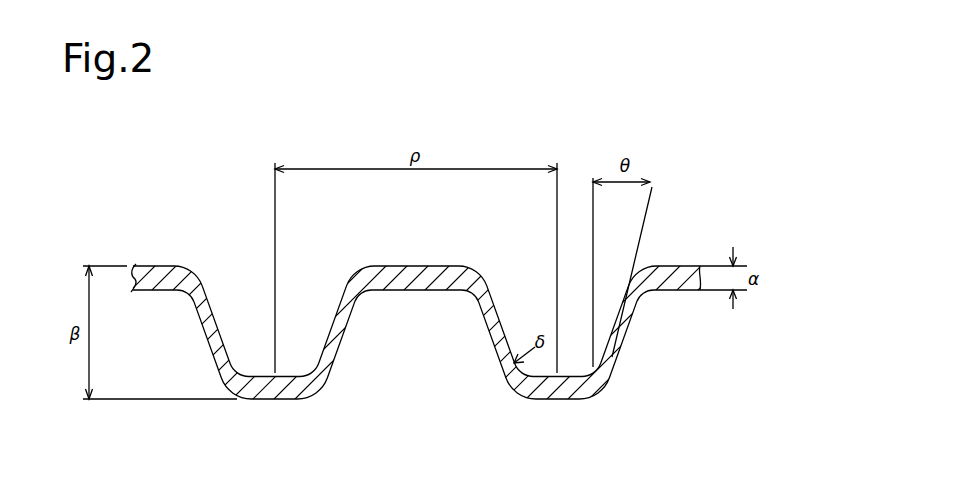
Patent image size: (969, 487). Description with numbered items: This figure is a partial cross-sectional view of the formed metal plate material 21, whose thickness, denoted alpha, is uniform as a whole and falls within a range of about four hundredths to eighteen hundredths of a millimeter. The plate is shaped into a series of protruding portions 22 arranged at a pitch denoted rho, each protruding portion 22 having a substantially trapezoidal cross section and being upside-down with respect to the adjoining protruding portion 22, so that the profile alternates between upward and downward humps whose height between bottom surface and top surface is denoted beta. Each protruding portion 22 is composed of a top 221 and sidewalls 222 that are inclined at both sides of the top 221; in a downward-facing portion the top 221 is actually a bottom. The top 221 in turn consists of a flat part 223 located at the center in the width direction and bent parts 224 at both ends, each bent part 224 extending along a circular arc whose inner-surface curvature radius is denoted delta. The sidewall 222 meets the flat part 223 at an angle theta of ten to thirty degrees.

The metal plate material 21 is at (155, 266).
The protruding portion 22 is at (419, 266).
The top 221 is at (443, 266).
The sidewall 222 is at (207, 337).
The flat part 223 is at (676, 266).
The bent part 224 is at (195, 271).